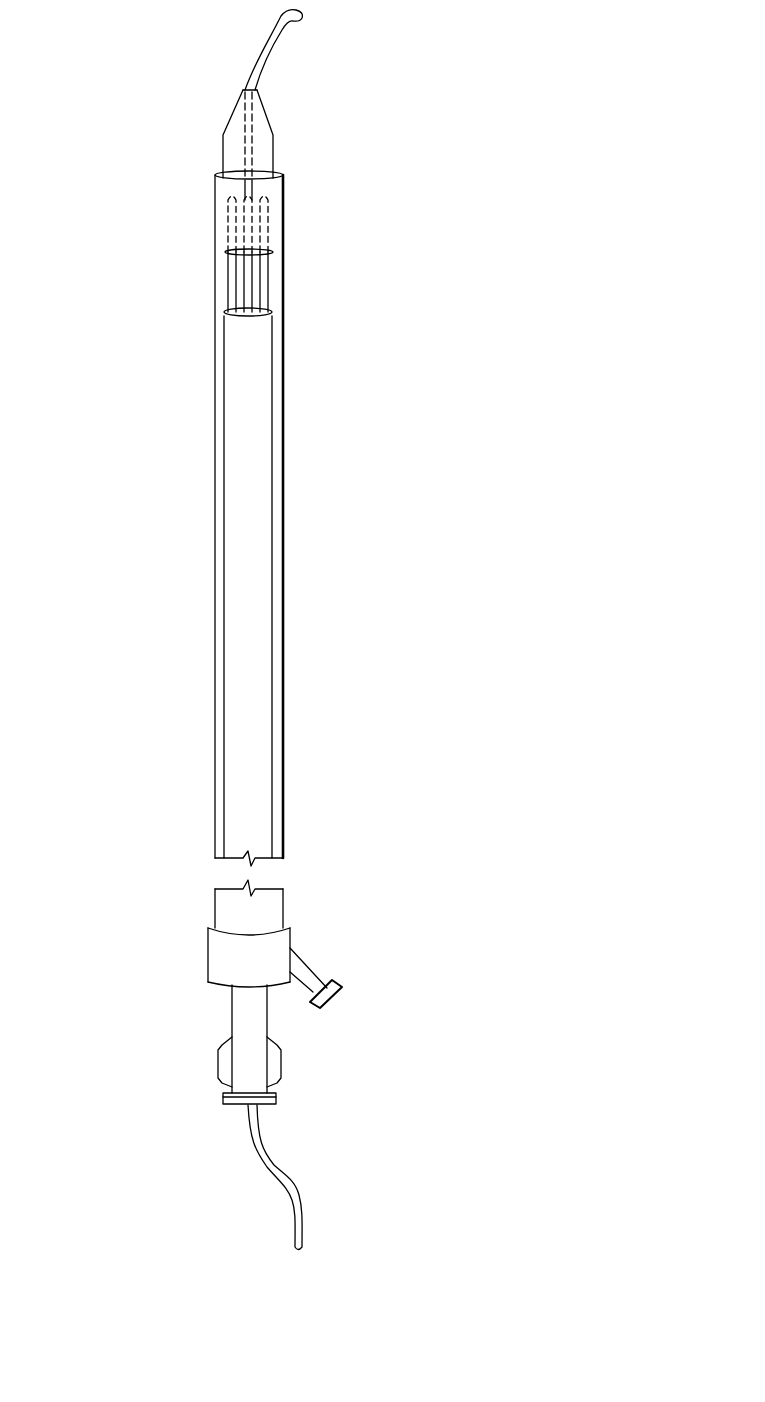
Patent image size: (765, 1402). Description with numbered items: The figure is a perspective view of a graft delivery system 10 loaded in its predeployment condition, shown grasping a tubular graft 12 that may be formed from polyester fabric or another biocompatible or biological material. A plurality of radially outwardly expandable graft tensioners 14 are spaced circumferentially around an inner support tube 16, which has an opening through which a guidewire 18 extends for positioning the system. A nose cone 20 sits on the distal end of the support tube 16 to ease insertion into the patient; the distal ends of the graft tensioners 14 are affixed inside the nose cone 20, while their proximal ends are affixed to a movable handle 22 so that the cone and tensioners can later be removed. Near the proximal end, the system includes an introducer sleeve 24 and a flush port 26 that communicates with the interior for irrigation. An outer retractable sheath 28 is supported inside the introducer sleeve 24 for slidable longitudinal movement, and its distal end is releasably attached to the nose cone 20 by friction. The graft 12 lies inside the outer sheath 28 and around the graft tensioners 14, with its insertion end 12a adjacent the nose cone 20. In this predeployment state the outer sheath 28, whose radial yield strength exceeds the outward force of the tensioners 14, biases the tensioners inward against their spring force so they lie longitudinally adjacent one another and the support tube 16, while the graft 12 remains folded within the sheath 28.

The graft delivery system 10 is at (377, 163).
The tubular graft 12 is at (258, 380).
The insertion end 12a is at (233, 324).
The graft tensioners 14 is at (255, 300).
The inner support tube 16 is at (235, 146).
The guidewire 18 is at (277, 48).
The nose cone 20 is at (224, 128).
The movable handle 22 is at (278, 1098).
The introducer sleeve 24 is at (233, 918).
The flush port 26 is at (336, 980).
The outer retractable sheath 28 is at (284, 570).